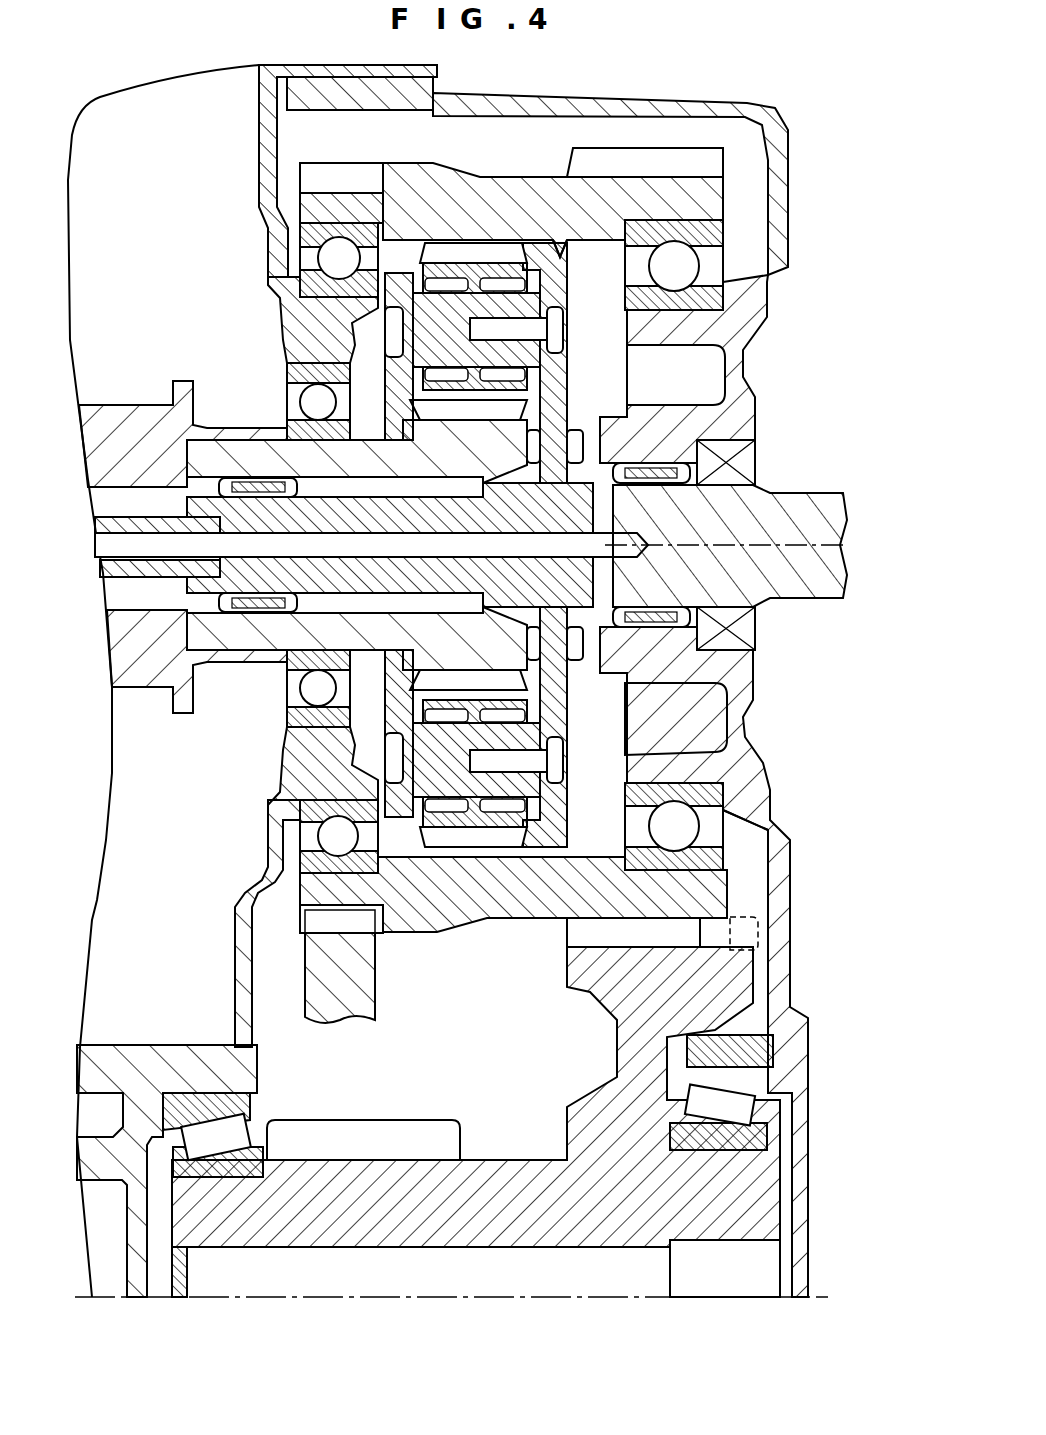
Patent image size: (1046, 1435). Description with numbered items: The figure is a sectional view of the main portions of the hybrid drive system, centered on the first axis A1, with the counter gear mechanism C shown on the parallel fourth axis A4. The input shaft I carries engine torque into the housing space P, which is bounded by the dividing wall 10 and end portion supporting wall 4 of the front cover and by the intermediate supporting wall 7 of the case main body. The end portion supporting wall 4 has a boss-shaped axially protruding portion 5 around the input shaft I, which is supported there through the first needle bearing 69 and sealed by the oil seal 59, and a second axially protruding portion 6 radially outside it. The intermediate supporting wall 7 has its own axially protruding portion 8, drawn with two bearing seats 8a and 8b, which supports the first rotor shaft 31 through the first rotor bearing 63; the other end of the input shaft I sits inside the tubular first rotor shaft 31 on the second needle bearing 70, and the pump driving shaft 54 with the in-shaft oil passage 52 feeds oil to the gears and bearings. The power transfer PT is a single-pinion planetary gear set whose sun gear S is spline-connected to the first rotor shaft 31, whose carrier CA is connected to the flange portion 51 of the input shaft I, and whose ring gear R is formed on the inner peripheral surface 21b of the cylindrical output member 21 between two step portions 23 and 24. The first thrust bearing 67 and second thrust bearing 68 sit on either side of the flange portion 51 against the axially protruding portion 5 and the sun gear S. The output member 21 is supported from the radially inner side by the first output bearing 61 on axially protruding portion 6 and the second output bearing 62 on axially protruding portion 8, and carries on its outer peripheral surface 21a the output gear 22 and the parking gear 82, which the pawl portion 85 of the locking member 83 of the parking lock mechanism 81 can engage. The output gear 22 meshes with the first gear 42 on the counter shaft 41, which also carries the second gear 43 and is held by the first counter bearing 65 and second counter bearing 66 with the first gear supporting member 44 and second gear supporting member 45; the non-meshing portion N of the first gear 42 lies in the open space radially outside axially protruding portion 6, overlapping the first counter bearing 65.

The end portion supporting wall 4 is at (790, 190).
The axially protruding portion 5 is at (622, 425).
The axially protruding portion 6 is at (640, 347).
The intermediate supporting wall 7 is at (259, 153).
The axially protruding portion 8 is at (327, 327).
The bearing 8a is at (300, 270).
The bearing 8b is at (287, 380).
The dividing wall 10 is at (592, 100).
The output member 21 is at (688, 195).
The outer peripheral surface 21a is at (505, 178).
The inner peripheral surface 21b is at (560, 254).
The output gear 22 is at (683, 155).
The step portion 23 is at (643, 860).
The step portion 24 is at (383, 920).
The first rotor shaft 31 is at (92, 408).
The counter shaft 41 is at (507, 1165).
The first gear 42 is at (567, 938).
The second gear 43 is at (393, 1120).
The first gear supporting member 44 is at (620, 1080).
The second gear supporting member 45 is at (340, 1160).
The flange portion 51 is at (563, 392).
The in-shaft oil passage 52 is at (393, 553).
The pump driving shaft 54 is at (150, 578).
The oil seal 59 is at (745, 633).
The first output bearing 61 is at (718, 795).
The second output bearing 62 is at (325, 837).
The first rotor bearing 63 is at (305, 690).
The first counter bearing 65 is at (752, 1110).
The second counter bearing 66 is at (200, 1130).
The first thrust bearing 67 is at (573, 665).
The second thrust bearing 68 is at (572, 712).
The first needle bearing 69 is at (670, 630).
The second needle bearing 70 is at (262, 477).
The parking lock mechanism 81 is at (290, 947).
The parking gear 82 is at (340, 180).
The locking member 83 is at (370, 1006).
The pawl portion 85 is at (313, 922).
The first axis A1 is at (747, 543).
The fourth axis A4 is at (473, 1295).
The counter gear mechanism C is at (313, 1085).
The carrier CA is at (555, 280).
The input shaft I is at (815, 495).
The non-meshing portion N is at (768, 890).
The housing space P is at (373, 158).
The power transfer PT is at (456, 212).
The ring gear R is at (412, 243).
The sun gear S is at (415, 408).